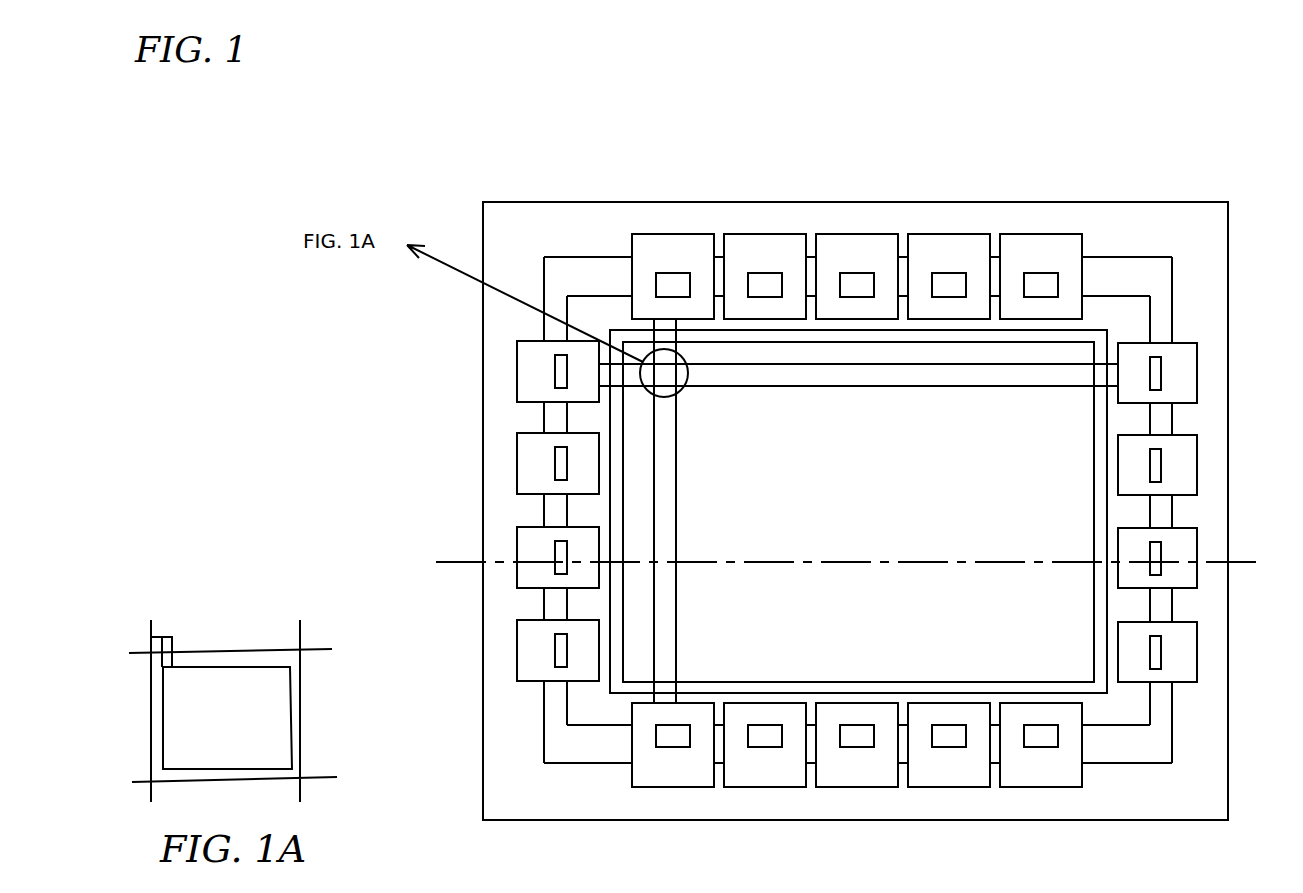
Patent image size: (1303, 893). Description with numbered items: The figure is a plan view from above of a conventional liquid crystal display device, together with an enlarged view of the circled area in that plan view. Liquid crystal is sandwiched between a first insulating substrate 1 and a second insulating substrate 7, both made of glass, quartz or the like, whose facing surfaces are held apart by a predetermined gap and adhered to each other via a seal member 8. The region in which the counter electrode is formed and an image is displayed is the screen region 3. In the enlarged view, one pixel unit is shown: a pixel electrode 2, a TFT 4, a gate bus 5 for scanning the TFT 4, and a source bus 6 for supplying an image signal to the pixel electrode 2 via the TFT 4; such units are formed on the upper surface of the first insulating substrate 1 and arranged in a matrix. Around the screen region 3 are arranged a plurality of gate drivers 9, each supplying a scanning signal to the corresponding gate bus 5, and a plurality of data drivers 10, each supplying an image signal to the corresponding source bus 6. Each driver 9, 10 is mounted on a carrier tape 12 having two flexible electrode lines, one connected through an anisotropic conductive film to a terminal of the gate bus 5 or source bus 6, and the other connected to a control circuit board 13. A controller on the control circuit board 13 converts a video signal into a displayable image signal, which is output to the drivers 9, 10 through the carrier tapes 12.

In FIG. 1, the first insulating substrate 1 is at (1139, 275).
In FIG. 1, the pixel electrode 2 is at (854, 565).
In FIG. 1A, the pixel electrode 2 is at (188, 729).
In FIG. 1, the screen region 3 is at (1078, 663).
In FIG. 1A, the TFT 4 is at (170, 647).
In FIG. 1A, the gate bus 5 is at (261, 650).
In FIG. 1A, the source bus 6 is at (152, 698).
In FIG. 1, the second insulating substrate 7 is at (1083, 353).
In FIG. 1, the seal member 8 is at (1097, 420).
In FIG. 1, the gate driver 9 is at (561, 371).
In FIG. 1, the data driver 10 is at (670, 283).
In FIG. 1, the carrier tape 12 is at (702, 245).
In FIG. 1, the control circuit board 13 is at (497, 507).